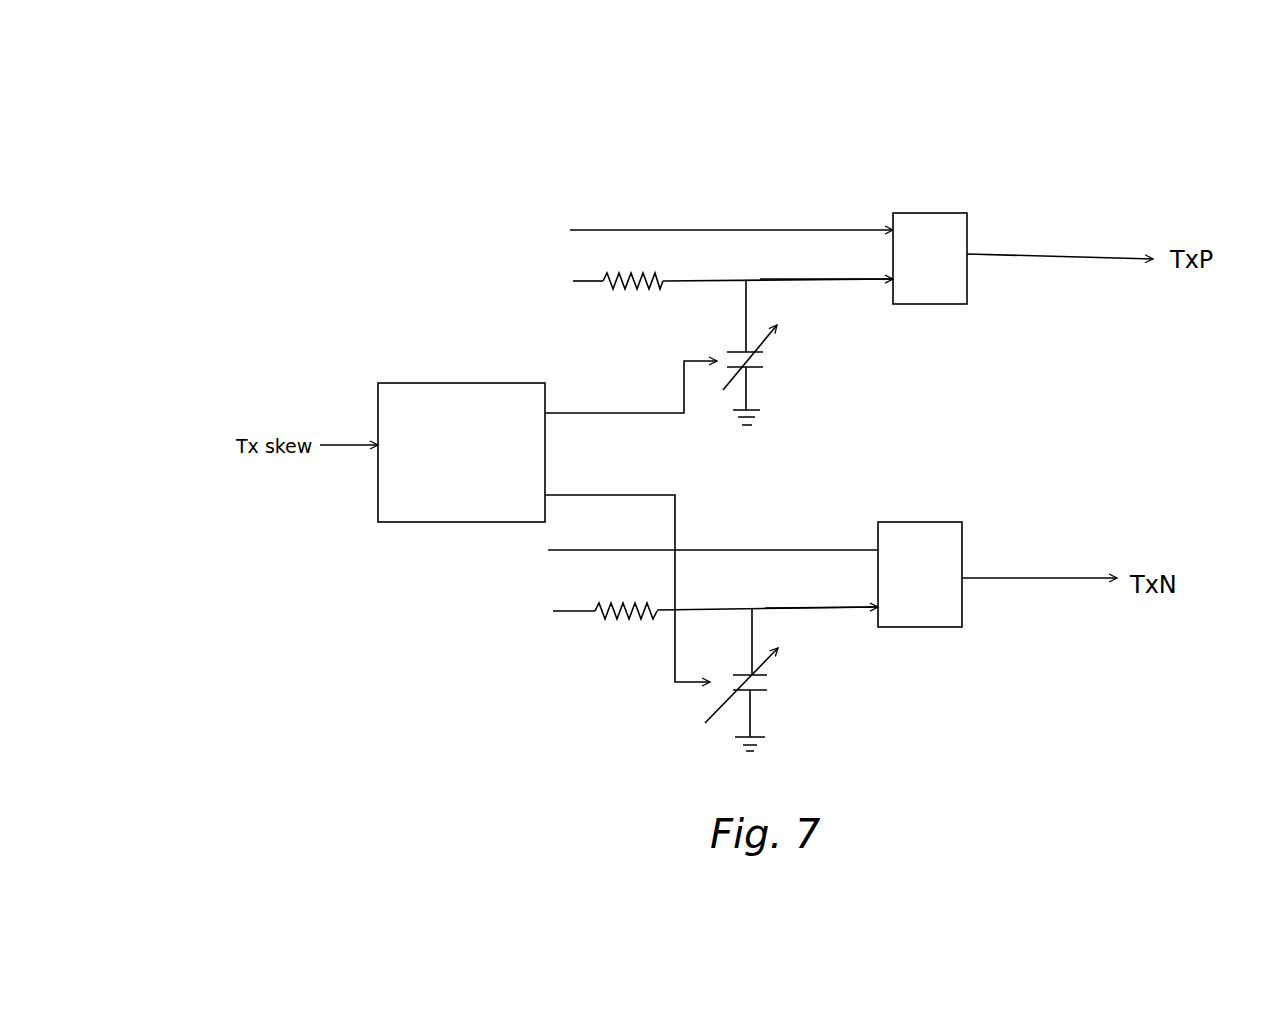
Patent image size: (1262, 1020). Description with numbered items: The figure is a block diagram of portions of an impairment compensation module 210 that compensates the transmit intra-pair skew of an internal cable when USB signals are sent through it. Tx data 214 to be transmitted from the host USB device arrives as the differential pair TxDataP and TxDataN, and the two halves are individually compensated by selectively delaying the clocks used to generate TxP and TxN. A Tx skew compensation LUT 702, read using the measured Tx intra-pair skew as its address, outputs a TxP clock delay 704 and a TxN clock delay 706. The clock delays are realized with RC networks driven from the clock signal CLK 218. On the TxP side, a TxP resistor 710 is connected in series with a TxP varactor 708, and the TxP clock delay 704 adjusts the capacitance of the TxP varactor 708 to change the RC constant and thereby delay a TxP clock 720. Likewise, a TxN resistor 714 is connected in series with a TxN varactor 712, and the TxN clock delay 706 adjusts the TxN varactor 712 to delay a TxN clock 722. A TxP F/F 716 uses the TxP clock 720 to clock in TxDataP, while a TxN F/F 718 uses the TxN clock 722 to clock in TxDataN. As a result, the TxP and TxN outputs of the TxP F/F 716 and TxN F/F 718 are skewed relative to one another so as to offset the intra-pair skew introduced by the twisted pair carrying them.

The impairment compensation module 210 is at (272, 120).
The Tx skew compensation LUT 702 is at (403, 383).
The TxP clock delay 704 is at (604, 411).
The TxN clock delay 706 is at (602, 494).
The TxP varactor 708 is at (771, 352).
The TxP resistor 710 is at (748, 271).
The TxN varactor 712 is at (761, 679).
The TxN resistor 714 is at (736, 599).
The TxP F/F 716 is at (913, 213).
The TxN F/F 718 is at (915, 522).
The TxP clock 720 is at (838, 281).
The TxN clock 722 is at (843, 609).
The Tx data 214 is at (677, 404).
The clock signal CLK 218 is at (545, 463).